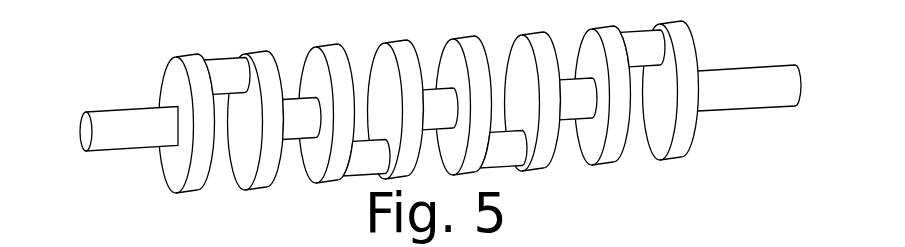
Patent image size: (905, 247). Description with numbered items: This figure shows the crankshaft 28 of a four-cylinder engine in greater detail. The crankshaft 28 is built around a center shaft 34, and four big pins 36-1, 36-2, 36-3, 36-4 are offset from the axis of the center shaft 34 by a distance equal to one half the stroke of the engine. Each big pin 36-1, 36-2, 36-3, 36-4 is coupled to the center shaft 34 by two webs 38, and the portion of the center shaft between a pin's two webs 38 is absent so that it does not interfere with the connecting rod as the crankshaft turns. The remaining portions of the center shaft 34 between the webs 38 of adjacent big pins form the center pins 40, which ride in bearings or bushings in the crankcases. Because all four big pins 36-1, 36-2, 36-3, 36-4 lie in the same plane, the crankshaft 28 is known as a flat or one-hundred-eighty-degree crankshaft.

The crankshaft 28 is at (445, 119).
The center shaft 34 is at (73, 135).
The first big pin 36-1 is at (225, 72).
The second big pin 36-2 is at (367, 160).
The third big pin 36-3 is at (503, 143).
The fourth big pin 36-4 is at (640, 48).
The web 38 is at (614, 153).
The center pin 40 is at (293, 110).